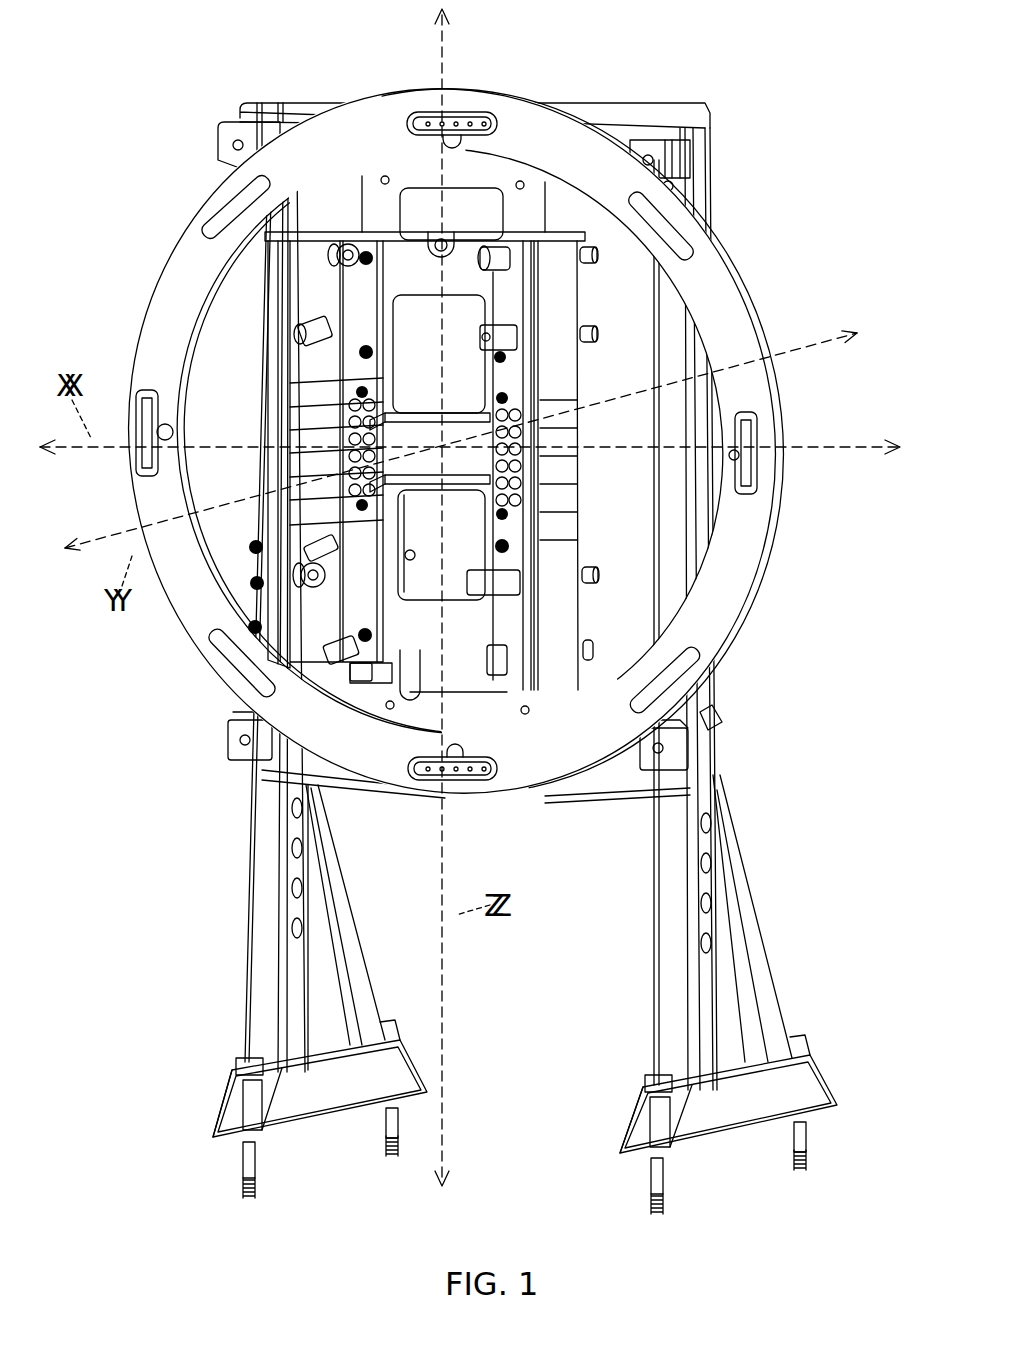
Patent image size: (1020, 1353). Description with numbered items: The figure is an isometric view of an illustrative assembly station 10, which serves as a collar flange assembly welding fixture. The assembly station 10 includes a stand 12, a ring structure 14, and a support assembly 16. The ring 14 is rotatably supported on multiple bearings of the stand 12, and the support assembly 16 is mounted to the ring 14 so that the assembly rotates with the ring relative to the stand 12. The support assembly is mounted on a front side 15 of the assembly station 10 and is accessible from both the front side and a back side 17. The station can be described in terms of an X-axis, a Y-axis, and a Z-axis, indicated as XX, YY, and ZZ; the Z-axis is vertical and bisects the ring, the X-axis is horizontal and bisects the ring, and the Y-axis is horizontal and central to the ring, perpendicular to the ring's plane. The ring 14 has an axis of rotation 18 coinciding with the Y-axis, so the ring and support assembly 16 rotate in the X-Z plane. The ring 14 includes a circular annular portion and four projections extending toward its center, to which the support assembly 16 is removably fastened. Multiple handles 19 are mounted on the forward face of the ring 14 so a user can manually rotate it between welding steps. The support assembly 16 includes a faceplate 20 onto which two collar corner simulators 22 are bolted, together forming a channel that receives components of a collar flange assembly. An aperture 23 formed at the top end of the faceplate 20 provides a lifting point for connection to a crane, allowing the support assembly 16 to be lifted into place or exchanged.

The assembly station 10 is at (152, 124).
The stand 12 is at (660, 142).
The ring structure 14 is at (727, 302).
The front side 15 is at (152, 735).
The support assembly 16 is at (275, 352).
The back side 17 is at (778, 600).
The axis of rotation 18 is at (826, 333).
The handles 19 is at (760, 470).
The faceplate 20 is at (432, 660).
The collar corner simulators 22 is at (556, 665).
The aperture 23 is at (447, 238).